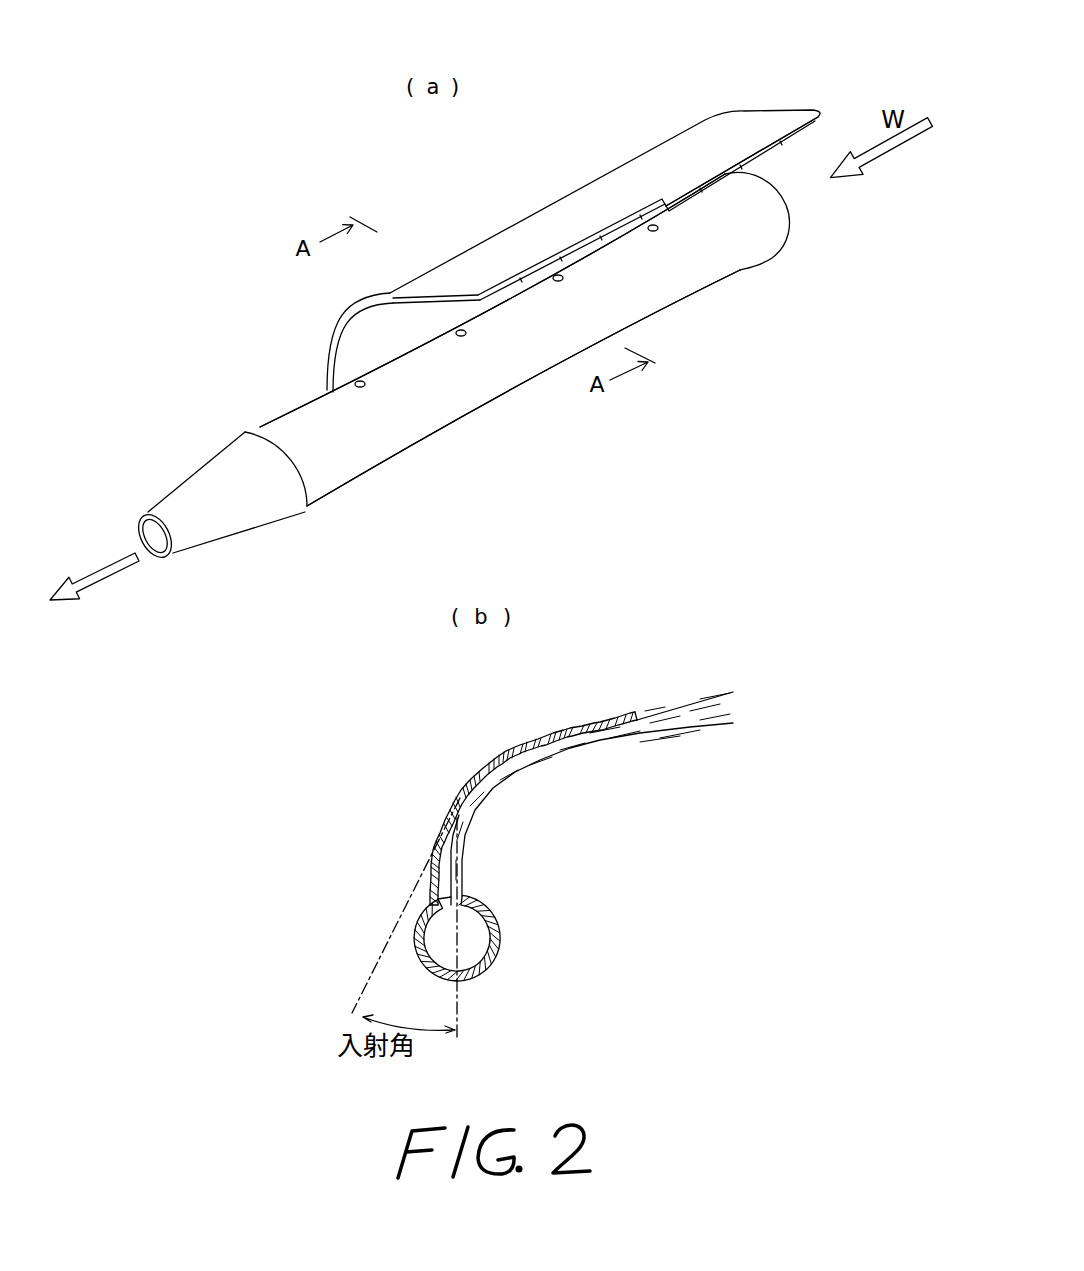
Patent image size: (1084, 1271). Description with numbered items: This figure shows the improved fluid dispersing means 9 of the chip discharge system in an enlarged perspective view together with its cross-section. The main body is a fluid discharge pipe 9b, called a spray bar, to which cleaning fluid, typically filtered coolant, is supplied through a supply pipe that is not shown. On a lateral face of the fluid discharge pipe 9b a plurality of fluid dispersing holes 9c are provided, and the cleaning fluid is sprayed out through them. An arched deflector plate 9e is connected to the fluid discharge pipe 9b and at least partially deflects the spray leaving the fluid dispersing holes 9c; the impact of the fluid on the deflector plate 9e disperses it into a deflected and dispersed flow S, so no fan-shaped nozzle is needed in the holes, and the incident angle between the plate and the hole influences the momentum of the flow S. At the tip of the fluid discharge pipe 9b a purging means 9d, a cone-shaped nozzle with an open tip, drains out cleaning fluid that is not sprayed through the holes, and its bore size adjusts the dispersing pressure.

The fluid dispersing means 9 is at (709, 321).
The fluid discharge pipe 9b is at (353, 457).
The fluid dispersing holes 9c is at (464, 336).
The purging means 9d is at (192, 482).
The deflector plate 9e is at (590, 203).
The deflected and dispersed flow S is at (708, 700).